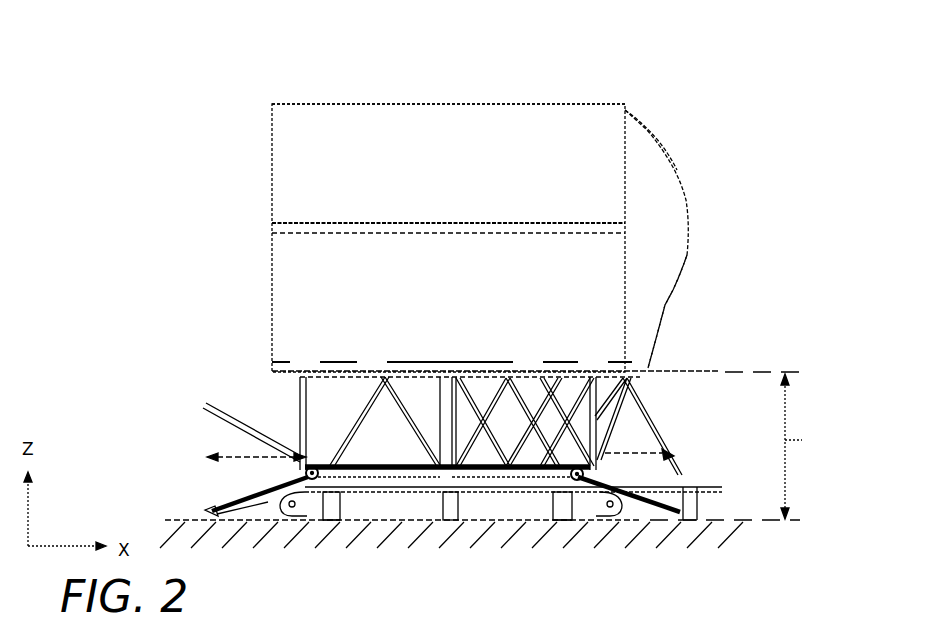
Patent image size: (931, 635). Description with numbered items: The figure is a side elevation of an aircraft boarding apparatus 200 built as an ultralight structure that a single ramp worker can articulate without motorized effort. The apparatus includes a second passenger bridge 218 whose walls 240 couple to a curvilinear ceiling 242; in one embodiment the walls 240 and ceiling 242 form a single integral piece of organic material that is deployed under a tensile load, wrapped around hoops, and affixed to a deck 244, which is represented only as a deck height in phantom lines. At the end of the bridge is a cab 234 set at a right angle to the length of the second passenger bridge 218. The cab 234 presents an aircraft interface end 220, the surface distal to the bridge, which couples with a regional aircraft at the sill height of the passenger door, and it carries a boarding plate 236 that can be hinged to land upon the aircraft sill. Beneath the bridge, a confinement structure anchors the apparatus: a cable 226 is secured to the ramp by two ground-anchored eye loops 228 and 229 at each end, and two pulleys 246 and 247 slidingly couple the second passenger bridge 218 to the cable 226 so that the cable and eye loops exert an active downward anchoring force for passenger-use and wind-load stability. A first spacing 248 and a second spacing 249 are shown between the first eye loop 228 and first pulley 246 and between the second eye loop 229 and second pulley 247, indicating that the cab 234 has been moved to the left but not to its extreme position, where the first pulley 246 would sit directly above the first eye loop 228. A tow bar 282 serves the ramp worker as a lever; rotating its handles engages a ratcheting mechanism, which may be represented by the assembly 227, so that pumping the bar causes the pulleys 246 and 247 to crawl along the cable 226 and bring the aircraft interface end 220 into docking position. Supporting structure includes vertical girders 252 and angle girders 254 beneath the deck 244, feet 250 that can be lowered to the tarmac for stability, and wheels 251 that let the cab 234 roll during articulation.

The aircraft boarding apparatus 200 is at (204, 130).
The second passenger bridge 218 is at (675, 175).
The aircraft interface end 220 is at (448, 238).
The cable 226 is at (238, 497).
The assembly 227 is at (306, 450).
The first eye loop 228 is at (208, 509).
The second eye loop 229 is at (700, 504).
The cab 234 is at (527, 104).
The boarding plate 236 is at (689, 368).
The walls 240 is at (678, 273).
The ceiling 242 is at (648, 130).
The deck 244 is at (445, 358).
The first pulley 246 is at (300, 467).
The second pulley 247 is at (600, 464).
The first spacing 248 is at (250, 454).
The second spacing 249 is at (650, 445).
The feet 250 is at (320, 524).
The wheels 251 is at (270, 514).
The vertical girders 252 is at (297, 421).
The angle girders 254 is at (630, 416).
The tow bar 282 is at (200, 410).